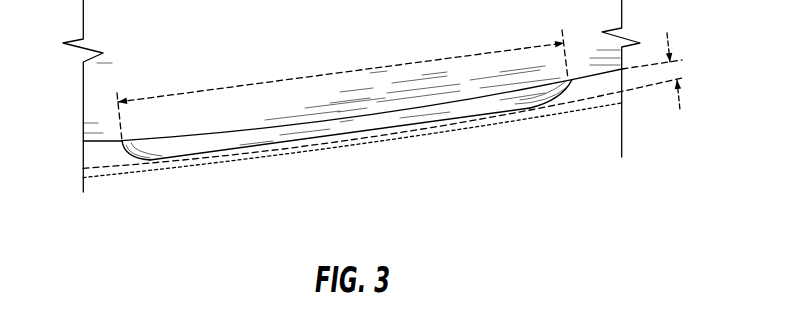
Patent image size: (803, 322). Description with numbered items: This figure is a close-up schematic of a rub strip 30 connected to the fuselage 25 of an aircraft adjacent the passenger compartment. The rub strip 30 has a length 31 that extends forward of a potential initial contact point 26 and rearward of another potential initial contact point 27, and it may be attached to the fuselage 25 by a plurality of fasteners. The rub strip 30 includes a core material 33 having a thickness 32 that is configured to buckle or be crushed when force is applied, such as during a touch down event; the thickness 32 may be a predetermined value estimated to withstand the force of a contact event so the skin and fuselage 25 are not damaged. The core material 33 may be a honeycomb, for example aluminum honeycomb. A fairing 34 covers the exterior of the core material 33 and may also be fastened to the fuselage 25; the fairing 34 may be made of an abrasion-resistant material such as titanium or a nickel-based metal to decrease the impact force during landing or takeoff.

The fuselage 25 is at (98, 143).
The potential initial contact point 26 is at (163, 160).
The potential initial contact point 27 is at (532, 109).
The rub strip 30 is at (357, 146).
The length 31 is at (342, 72).
The thickness 32 is at (668, 40).
The core material 33 is at (221, 145).
The fairing 34 is at (127, 152).